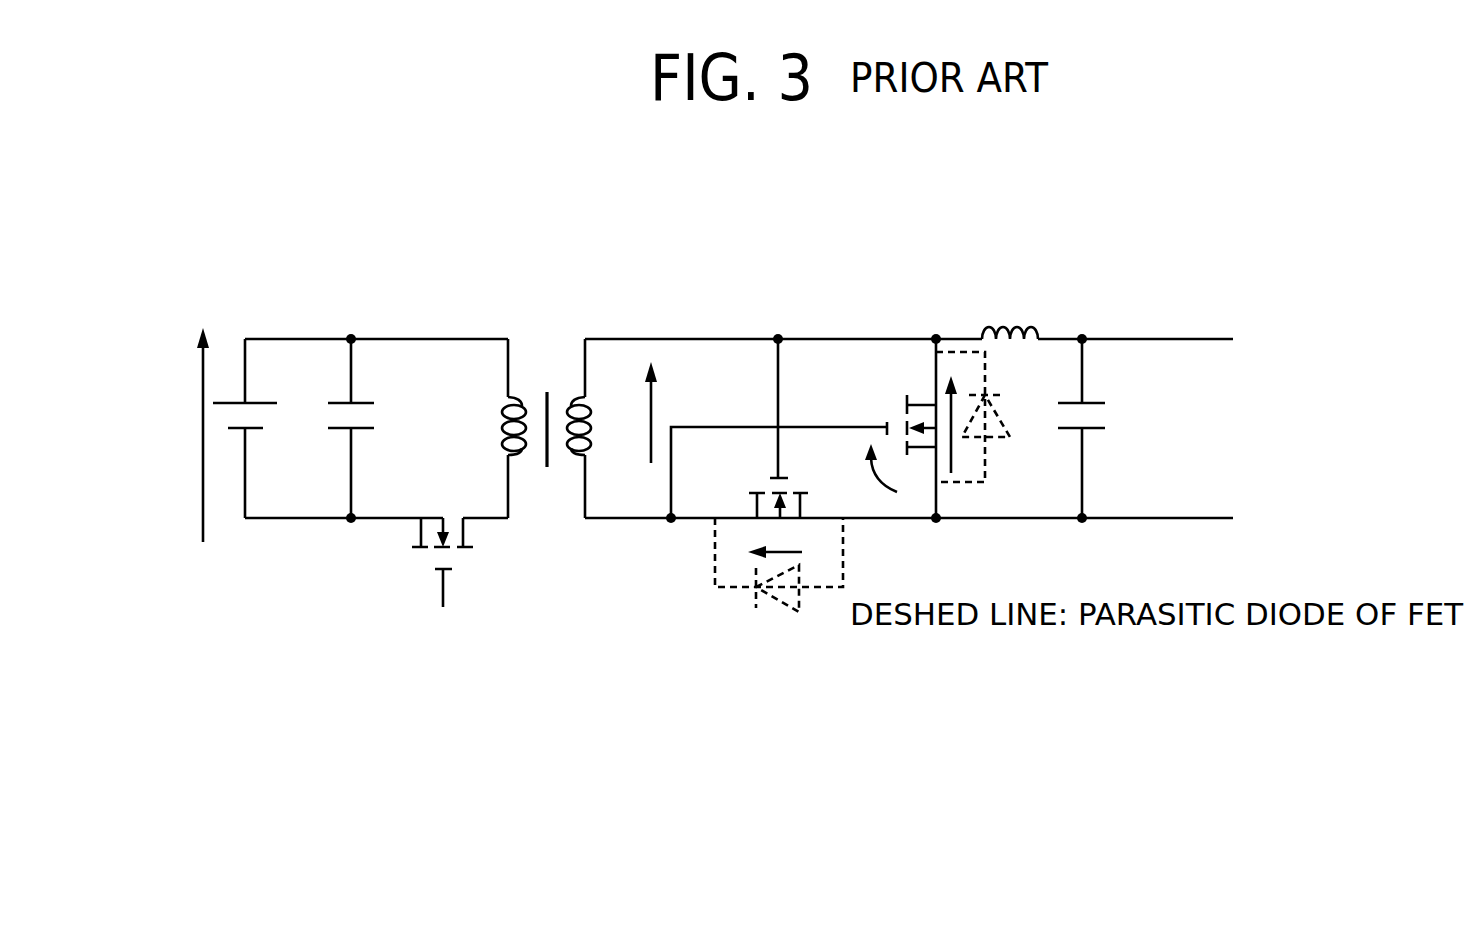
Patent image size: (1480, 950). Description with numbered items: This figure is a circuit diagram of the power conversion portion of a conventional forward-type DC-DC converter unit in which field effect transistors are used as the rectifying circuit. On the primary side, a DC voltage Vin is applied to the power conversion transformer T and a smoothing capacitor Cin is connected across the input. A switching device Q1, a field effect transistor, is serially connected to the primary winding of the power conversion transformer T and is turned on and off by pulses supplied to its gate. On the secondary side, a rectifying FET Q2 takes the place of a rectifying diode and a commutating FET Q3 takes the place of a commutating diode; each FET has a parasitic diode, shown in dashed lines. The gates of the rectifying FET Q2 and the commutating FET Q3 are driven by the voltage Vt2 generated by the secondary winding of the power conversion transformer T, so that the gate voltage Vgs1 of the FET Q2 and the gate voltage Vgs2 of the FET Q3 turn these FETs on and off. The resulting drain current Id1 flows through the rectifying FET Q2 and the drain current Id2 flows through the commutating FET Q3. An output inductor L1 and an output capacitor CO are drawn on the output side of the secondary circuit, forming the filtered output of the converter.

The DC voltage Vin is at (165, 435).
The smoothing capacitor Cin is at (367, 428).
The power conversion transformer T is at (546, 403).
The switching device Q1 is at (459, 552).
The rectifying FET Q2 is at (770, 475).
The commutating FET Q3 is at (921, 428).
The voltage generated by the secondary winding Vt2 is at (678, 412).
The gate voltage of the FET Q2 Vgs1 is at (822, 464).
The gate voltage of the FET Q3 Vgs2 is at (866, 480).
The drain current flowing through the FET Q2 Id1 is at (822, 561).
The drain current flowing through the FET Q3 Id2 is at (992, 426).
The output inductor L1 is at (1010, 352).
The output capacitor CO is at (1096, 428).